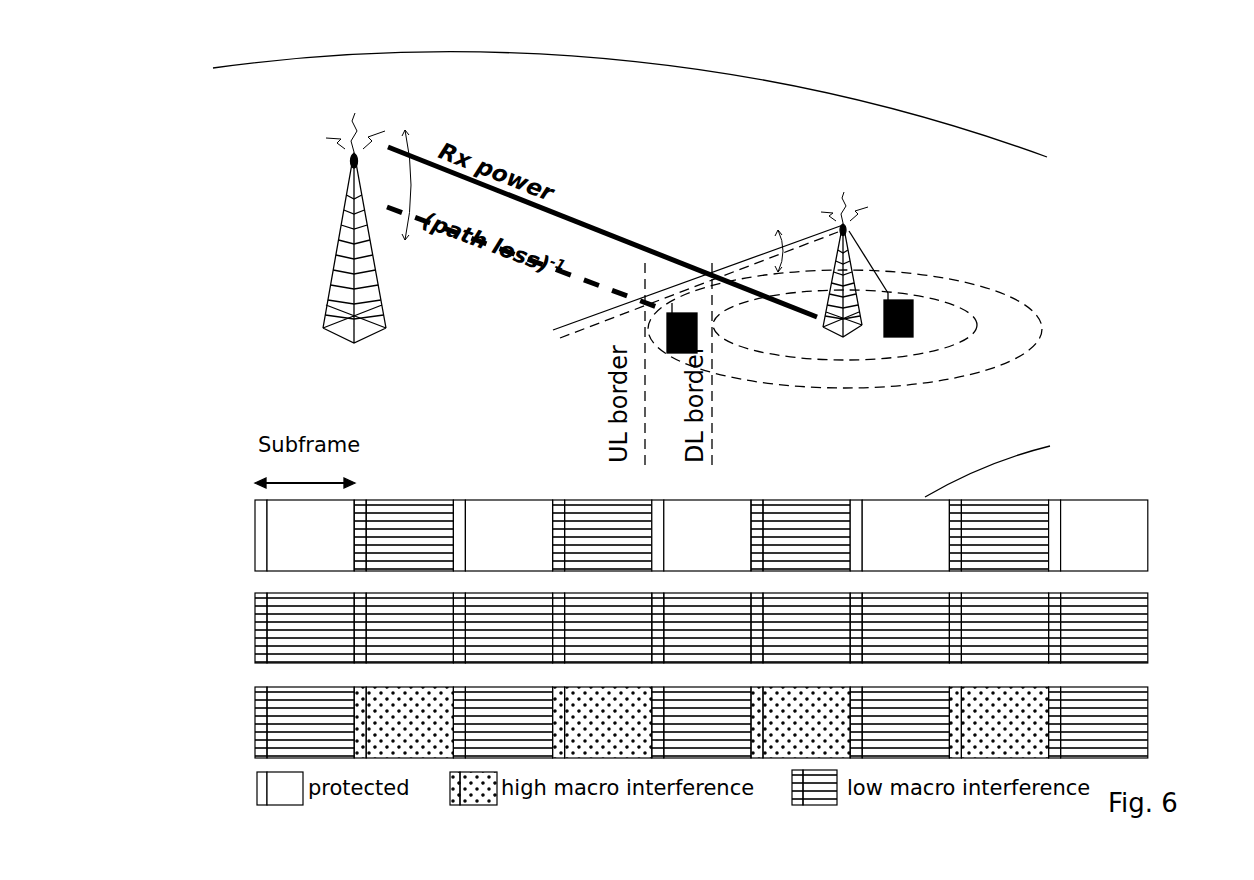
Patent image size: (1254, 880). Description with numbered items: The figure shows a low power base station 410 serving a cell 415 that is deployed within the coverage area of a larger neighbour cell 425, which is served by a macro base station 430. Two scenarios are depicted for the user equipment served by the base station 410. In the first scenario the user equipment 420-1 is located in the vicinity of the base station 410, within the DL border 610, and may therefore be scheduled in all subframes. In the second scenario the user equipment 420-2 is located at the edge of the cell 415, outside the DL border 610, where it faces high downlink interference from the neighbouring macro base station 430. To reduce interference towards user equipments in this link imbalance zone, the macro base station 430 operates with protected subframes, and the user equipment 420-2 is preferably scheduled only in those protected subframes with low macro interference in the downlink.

The neighbour cell 425 is at (895, 100).
The macro base station 430 is at (323, 313).
The low power base station 410 is at (858, 330).
The cell 415 is at (1037, 333).
The DL border 610 is at (967, 337).
The user equipment 420-1 is at (913, 318).
The user equipment 420-2 is at (697, 317).